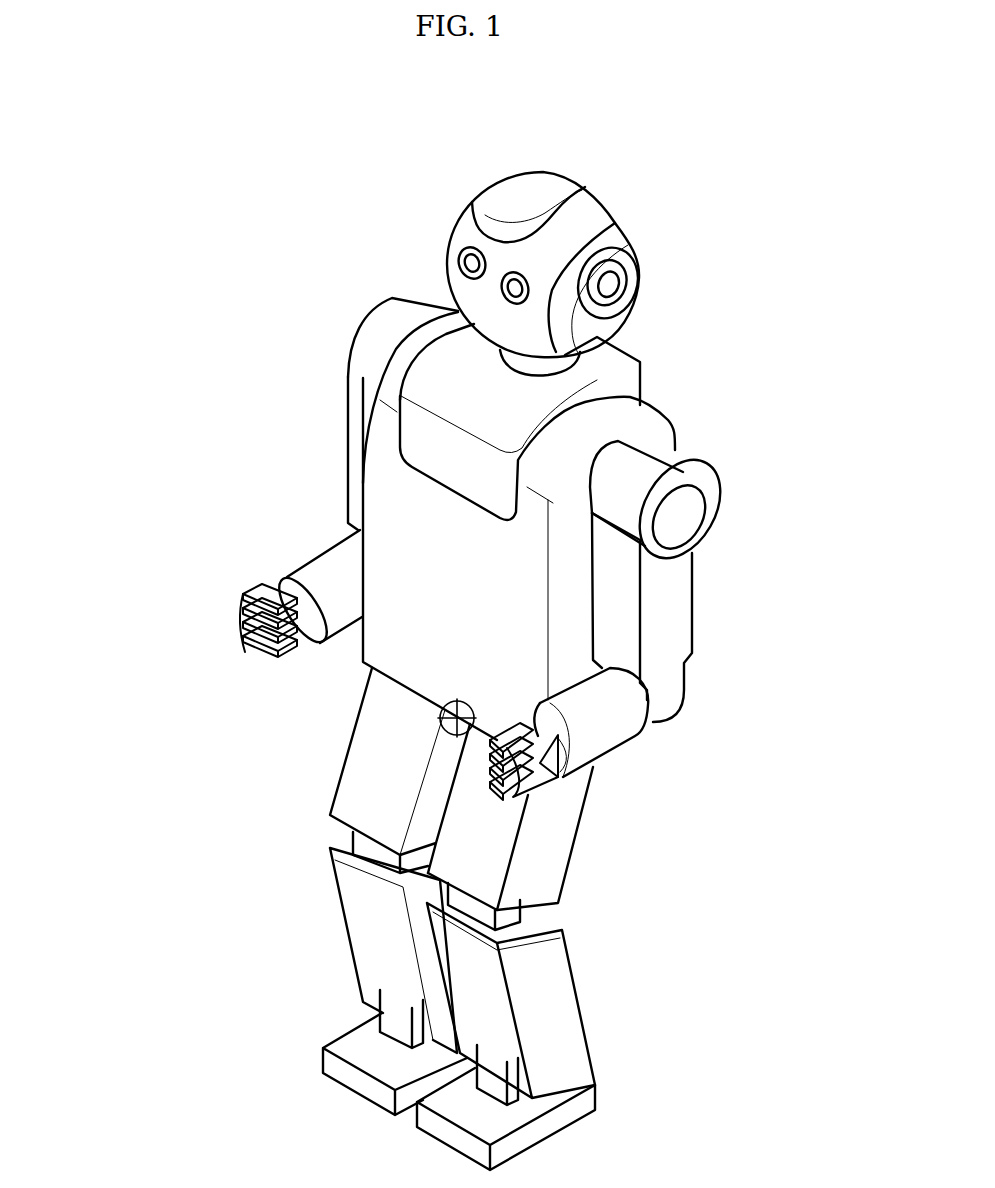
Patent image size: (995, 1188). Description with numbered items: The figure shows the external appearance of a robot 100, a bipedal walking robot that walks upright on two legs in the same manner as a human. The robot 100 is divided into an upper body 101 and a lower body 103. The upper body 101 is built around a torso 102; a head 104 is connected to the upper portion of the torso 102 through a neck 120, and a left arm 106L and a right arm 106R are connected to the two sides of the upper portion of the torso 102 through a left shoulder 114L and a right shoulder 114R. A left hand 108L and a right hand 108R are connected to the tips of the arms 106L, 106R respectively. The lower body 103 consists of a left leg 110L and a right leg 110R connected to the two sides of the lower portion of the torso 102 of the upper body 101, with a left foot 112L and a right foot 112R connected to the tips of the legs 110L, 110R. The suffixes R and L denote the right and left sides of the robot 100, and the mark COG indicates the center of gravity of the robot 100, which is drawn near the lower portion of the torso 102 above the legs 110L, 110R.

The robot 100 is at (452, 134).
The upper body 101 is at (240, 390).
The torso 102 is at (397, 505).
The lower body 103 is at (288, 829).
The head 104 is at (457, 238).
The right arm 106R is at (307, 570).
The left arm 106L is at (673, 678).
The right hand 108R is at (242, 615).
The left hand 108L is at (535, 782).
The right leg 110R is at (355, 927).
The left leg 110L is at (562, 998).
The right foot 112R is at (332, 1065).
The left foot 112L is at (540, 1128).
The right shoulder 114R is at (376, 328).
The left shoulder 114L is at (676, 466).
The neck 120 is at (563, 360).
The center of gravity COG is at (440, 715).